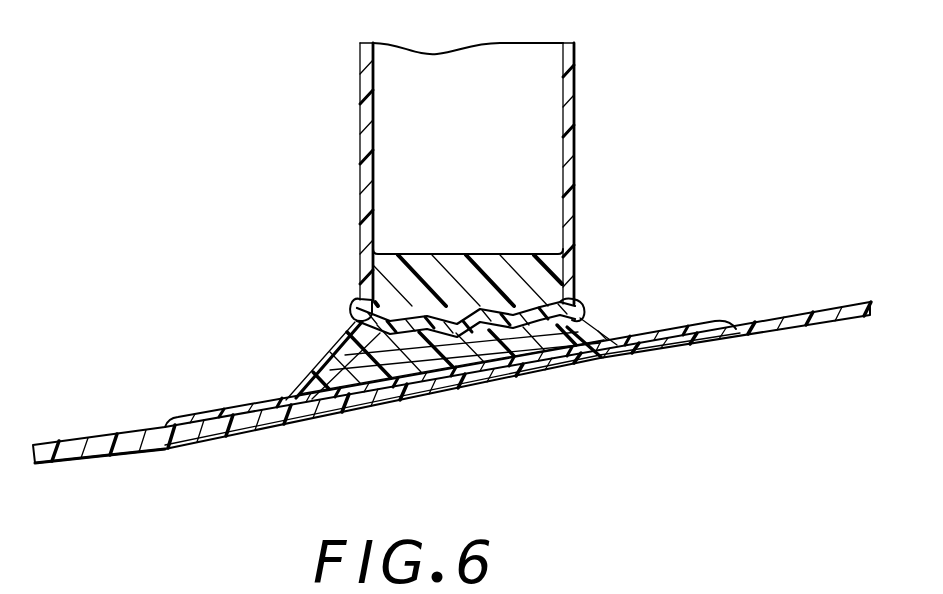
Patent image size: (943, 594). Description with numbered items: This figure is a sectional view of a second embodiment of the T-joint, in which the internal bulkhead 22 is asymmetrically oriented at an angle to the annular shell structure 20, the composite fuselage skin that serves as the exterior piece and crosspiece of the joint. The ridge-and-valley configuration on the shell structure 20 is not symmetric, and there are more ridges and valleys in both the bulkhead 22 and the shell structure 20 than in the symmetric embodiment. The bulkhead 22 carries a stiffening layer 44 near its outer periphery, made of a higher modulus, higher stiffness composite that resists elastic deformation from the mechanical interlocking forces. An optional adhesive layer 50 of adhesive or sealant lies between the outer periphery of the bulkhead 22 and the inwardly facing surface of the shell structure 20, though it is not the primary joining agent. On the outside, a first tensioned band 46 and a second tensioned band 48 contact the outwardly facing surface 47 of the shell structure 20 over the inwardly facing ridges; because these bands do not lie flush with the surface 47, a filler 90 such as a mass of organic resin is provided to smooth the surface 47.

The annular shell structure 20 is at (766, 320).
The internal bulkhead 22 is at (540, 107).
The stiffening layer 44 is at (388, 275).
The first tensioned band 46 is at (528, 342).
The outwardly facing surface 47 is at (720, 340).
The second tensioned band 48 is at (390, 362).
The adhesive layer 50 is at (355, 308).
The filler 90 is at (348, 393).